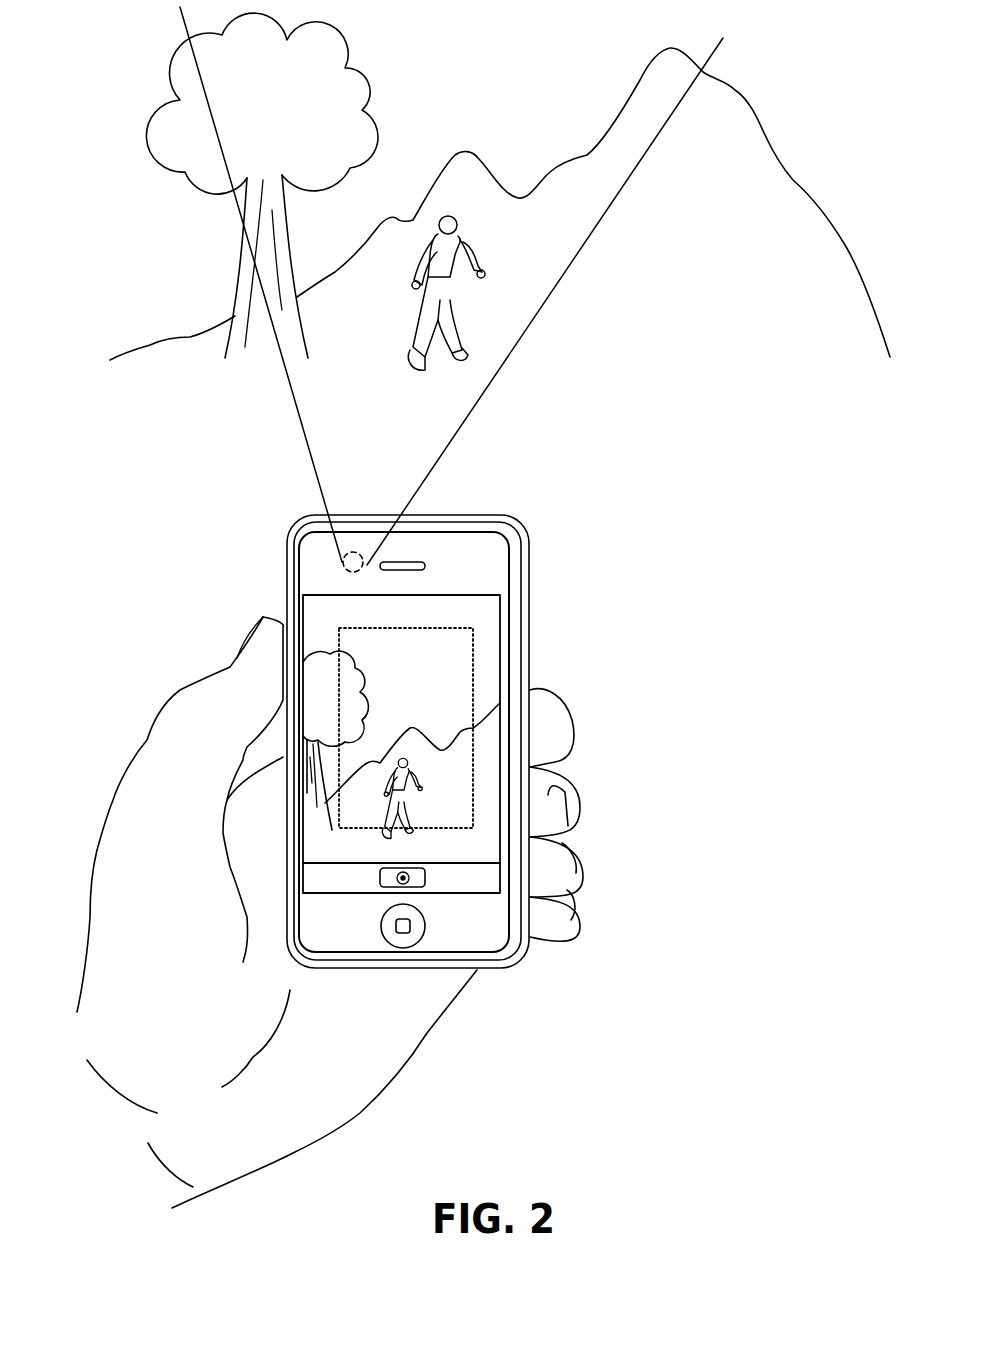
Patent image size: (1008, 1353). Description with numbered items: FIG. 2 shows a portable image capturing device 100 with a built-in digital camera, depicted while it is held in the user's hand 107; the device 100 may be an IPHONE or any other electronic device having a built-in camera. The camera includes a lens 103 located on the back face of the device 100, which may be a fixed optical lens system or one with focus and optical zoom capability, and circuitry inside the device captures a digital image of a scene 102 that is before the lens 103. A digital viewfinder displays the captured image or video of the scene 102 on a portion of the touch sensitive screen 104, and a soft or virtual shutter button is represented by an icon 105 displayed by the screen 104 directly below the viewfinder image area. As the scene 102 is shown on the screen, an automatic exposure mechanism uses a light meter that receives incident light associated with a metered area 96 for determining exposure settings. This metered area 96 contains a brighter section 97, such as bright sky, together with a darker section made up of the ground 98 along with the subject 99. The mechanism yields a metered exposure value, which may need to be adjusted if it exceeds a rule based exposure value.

The metered area 96 is at (428, 628).
The brighter section 97 is at (385, 673).
The ground 98 is at (463, 787).
The subject 99 is at (400, 810).
The portable image capturing device 100 is at (344, 816).
The scene 102 is at (760, 413).
The lens 103 is at (347, 568).
The touch sensitive screen 104 is at (292, 840).
The icon 105 is at (380, 876).
The user's hand 107 is at (165, 755).